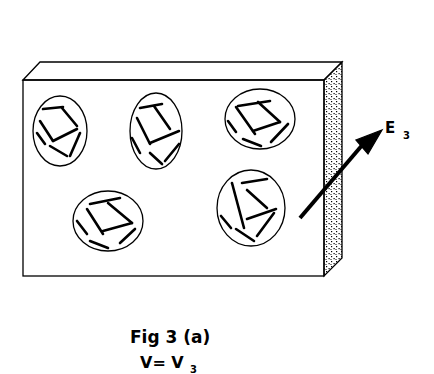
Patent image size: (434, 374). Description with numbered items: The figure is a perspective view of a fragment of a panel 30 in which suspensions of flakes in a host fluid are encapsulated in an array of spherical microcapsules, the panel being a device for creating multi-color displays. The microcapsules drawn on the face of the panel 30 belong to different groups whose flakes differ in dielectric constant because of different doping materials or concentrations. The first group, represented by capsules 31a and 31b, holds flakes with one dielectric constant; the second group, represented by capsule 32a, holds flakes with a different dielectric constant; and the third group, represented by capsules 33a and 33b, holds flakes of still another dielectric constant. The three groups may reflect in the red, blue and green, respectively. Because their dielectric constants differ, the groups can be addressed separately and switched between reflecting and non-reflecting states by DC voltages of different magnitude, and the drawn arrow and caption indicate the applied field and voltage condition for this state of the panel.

The panel 30 is at (295, 250).
The capsule of first group 31a is at (58, 107).
The capsule of second group 32a is at (168, 113).
The capsule of first group 31b is at (272, 88).
The capsule of third group 33a is at (86, 233).
The capsule of third group 33b is at (272, 227).